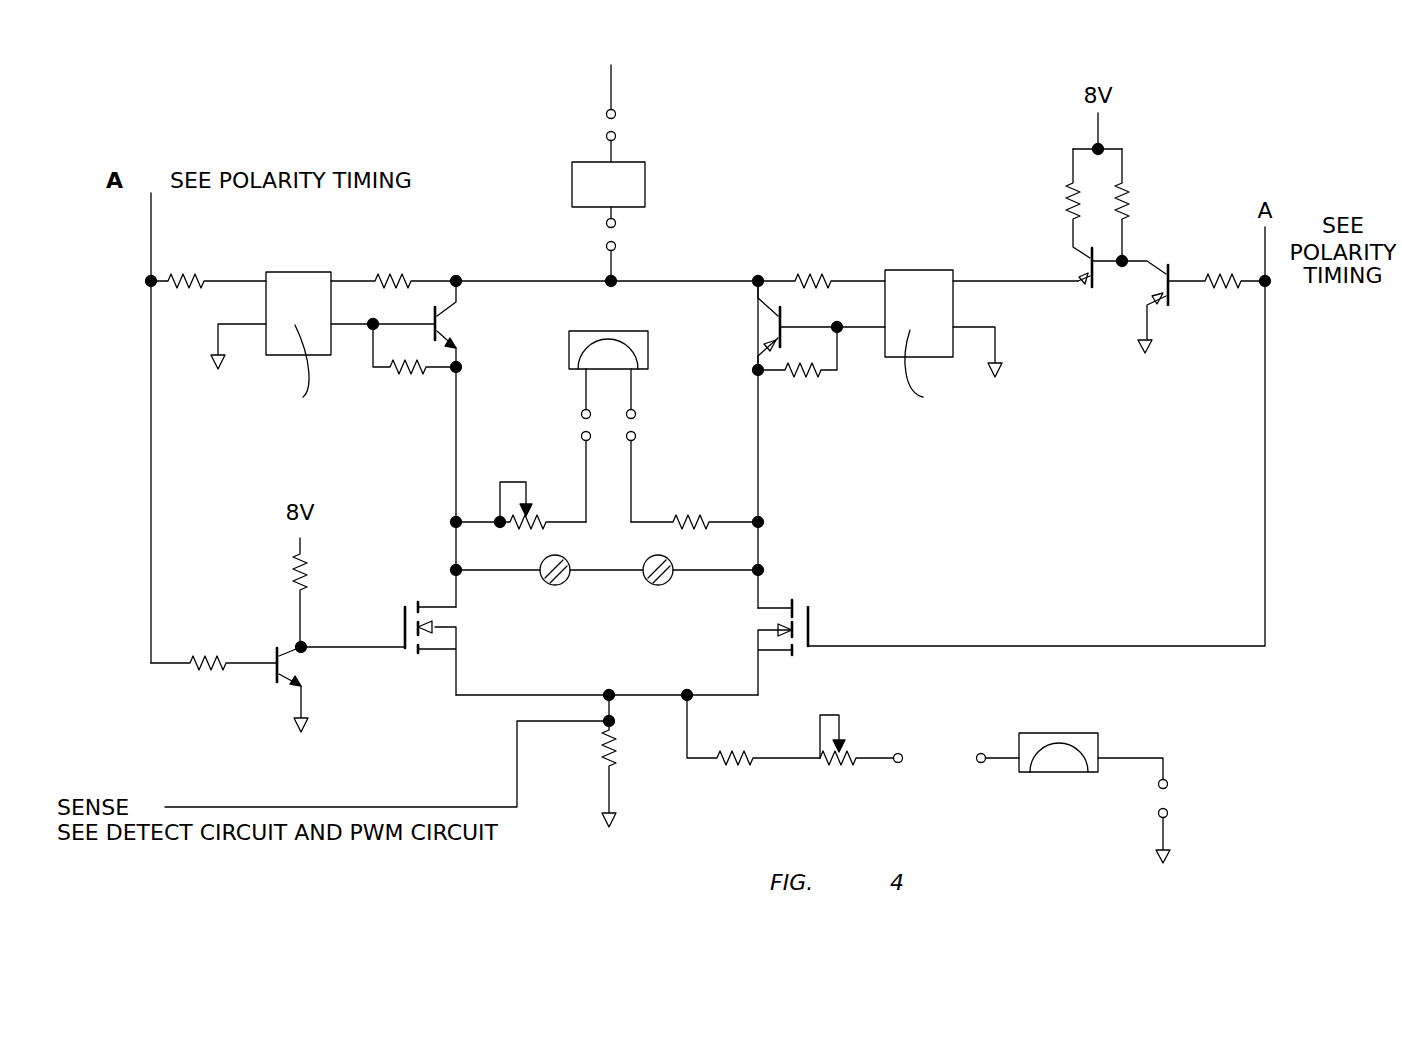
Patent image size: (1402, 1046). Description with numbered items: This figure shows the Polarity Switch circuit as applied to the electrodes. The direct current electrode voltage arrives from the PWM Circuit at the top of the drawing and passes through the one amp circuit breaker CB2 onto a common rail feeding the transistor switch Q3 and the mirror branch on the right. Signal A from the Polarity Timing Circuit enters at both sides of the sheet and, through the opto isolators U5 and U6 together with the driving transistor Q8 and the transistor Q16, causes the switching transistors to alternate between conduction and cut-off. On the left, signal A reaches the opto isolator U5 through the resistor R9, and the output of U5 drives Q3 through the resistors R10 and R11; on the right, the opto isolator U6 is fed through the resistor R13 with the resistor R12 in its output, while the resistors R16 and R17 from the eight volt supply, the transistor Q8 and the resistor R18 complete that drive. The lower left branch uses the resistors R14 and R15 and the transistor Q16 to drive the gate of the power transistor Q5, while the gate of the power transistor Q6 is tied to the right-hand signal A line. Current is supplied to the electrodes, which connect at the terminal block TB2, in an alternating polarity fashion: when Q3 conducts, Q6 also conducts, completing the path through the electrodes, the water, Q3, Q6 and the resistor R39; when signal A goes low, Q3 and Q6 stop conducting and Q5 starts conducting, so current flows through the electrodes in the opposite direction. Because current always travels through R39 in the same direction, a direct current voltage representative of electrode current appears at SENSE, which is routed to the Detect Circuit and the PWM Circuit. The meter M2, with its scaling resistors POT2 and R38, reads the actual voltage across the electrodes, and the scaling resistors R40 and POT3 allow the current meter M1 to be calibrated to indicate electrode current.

The resistor 300 ohm R9 is at (208, 278).
The resistor 1K R10 is at (393, 254).
The resistor 1K R11 is at (410, 375).
The resistor 1K R12 is at (800, 377).
The resistor 1K R13 is at (821, 250).
The resistor 1K R14 is at (214, 668).
The resistor 300 ohm R15 is at (330, 590).
The resistor 300 ohm R16 is at (1050, 203).
The resistor 1K R17 is at (1153, 208).
The resistor 1K R18 is at (1216, 311).
The scaling resistor R38 is at (694, 503).
The resistor R39 is at (637, 761).
The scaling resistor R40 is at (753, 746).
The opto isolator U5 is at (323, 322).
The opto isolator U6 is at (929, 323).
The transistor switch Q3 is at (488, 324).
The transistor Q5 is at (432, 648).
The transistor Q6 is at (824, 650).
The transistor Q8 is at (1184, 288).
The transistor 2N2222 Q16 is at (340, 687).
The circuit breaker CB2 is at (703, 157).
The meter M1 is at (1092, 783).
The meter M2 is at (594, 409).
The scaling resistor POT2 is at (521, 519).
The scaling resistor POT3 is at (884, 754).
The electrodes terminal block TB2 is at (607, 572).